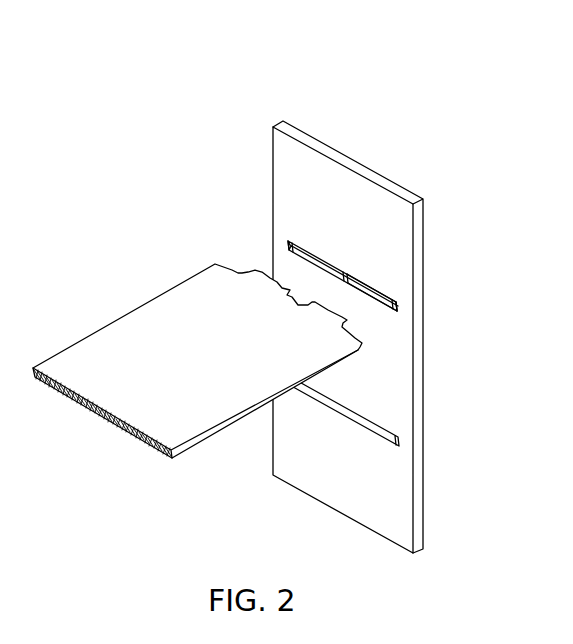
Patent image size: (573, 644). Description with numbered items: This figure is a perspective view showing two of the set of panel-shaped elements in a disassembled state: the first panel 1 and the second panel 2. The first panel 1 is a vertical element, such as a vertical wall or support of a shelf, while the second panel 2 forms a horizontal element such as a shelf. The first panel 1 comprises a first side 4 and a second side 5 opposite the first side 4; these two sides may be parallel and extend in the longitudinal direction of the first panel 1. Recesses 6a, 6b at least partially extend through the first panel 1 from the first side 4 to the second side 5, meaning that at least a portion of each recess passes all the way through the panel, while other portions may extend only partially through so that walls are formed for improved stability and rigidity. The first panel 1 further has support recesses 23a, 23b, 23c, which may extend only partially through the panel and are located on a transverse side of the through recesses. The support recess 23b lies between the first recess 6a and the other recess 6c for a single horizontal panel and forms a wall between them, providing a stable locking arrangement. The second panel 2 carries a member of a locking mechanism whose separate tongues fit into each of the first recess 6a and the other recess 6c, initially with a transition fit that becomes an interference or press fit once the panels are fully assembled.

The first panel 1 is at (377, 312).
The second panel 2 is at (175, 307).
The first side 4 is at (372, 493).
The second side 5 is at (420, 492).
The first recess 6a is at (368, 290).
The recess 6b is at (368, 426).
The other recess 6c is at (309, 257).
The support recess 23a is at (290, 247).
The support recess 23b is at (347, 275).
The support recess 23c is at (394, 307).